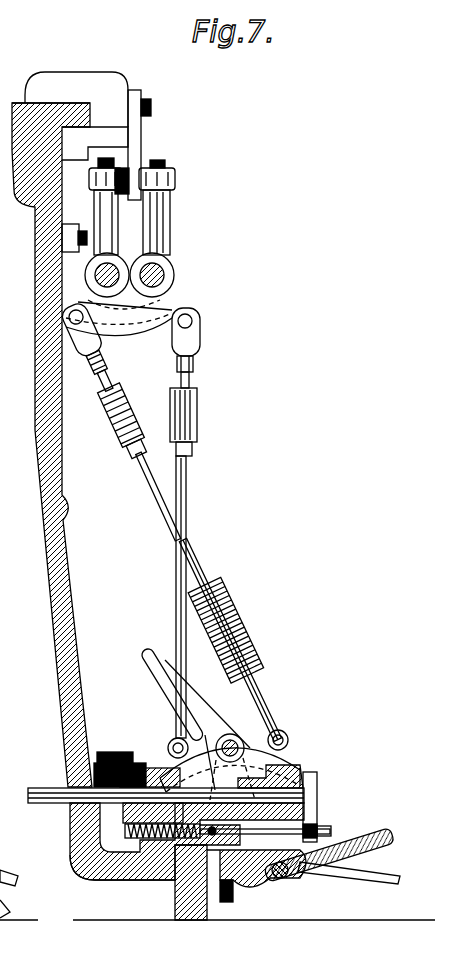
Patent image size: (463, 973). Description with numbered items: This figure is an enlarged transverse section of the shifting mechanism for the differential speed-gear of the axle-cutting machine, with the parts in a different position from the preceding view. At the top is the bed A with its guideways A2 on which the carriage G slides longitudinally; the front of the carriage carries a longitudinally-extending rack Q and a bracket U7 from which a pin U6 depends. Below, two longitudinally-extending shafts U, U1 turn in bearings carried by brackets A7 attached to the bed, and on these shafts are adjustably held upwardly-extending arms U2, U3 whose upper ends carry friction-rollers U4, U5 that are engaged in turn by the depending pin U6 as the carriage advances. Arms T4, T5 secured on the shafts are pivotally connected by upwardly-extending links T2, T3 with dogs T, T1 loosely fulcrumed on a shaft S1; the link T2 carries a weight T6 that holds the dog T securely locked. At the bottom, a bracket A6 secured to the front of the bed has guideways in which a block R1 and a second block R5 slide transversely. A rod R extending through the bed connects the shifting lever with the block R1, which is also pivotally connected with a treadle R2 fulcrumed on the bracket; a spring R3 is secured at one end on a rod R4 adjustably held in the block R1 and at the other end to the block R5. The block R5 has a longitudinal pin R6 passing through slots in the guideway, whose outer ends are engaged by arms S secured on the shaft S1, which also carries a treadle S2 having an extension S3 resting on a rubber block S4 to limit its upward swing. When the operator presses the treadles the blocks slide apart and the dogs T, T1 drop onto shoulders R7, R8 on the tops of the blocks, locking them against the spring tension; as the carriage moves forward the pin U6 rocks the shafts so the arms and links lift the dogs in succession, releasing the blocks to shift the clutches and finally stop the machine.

The bed A is at (35, 349).
The guideways A2 is at (74, 115).
The bracket A6 is at (240, 850).
The brackets A7 is at (64, 238).
The carriage G is at (82, 82).
The rack Q is at (95, 143).
The shaft U is at (165, 272).
The shaft U1 is at (98, 273).
The arm U2 is at (170, 212).
The arm U3 is at (95, 206).
The friction-roller U4 is at (176, 178).
The friction-roller U5 is at (89, 180).
The pin U6 is at (136, 180).
The bracket U7 is at (141, 118).
The dog T is at (287, 742).
The dog T1 is at (168, 768).
The link T2 is at (197, 564).
The link T3 is at (192, 490).
The arm T4 is at (112, 320).
The arm T5 is at (165, 322).
The weight T6 is at (246, 630).
The arms S is at (216, 826).
The shaft S1 is at (232, 734).
The treadle S2 is at (352, 876).
The extension S3 is at (150, 672).
The rubber block S4 is at (116, 752).
The rod R is at (46, 790).
The block R1 is at (317, 775).
The treadle R2 is at (380, 842).
The spring R3 is at (120, 880).
The rod R4 is at (324, 828).
The block R5 is at (100, 812).
The pin R6 is at (172, 880).
The shoulder R7 is at (292, 765).
The shoulder R8 is at (137, 775).